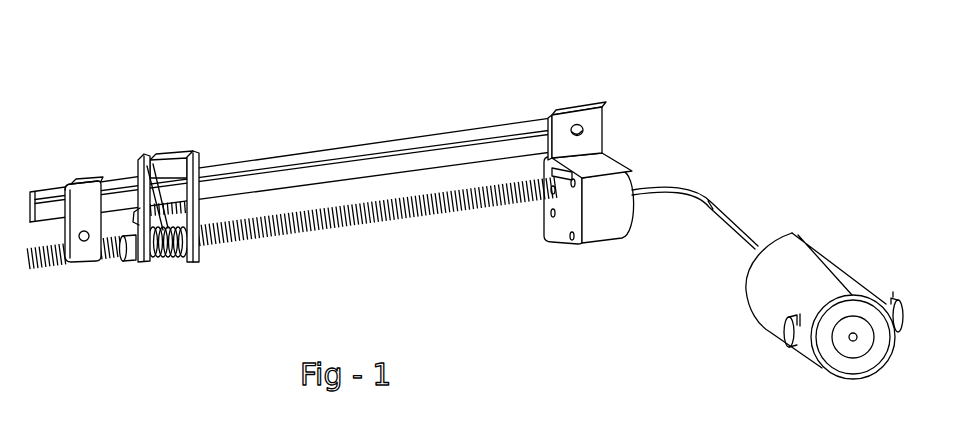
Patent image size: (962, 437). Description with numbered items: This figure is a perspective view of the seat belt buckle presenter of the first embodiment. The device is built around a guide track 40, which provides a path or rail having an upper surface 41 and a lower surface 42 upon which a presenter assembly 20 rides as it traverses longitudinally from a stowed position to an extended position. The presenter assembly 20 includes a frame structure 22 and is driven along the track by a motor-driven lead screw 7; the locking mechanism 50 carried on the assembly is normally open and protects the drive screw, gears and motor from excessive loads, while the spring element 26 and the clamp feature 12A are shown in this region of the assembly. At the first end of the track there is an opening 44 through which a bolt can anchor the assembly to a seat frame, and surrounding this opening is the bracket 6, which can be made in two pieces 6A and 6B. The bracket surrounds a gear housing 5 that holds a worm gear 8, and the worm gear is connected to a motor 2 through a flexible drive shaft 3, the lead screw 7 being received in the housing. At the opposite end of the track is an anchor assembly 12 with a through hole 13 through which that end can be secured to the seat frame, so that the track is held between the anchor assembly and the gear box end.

The motor 2 is at (778, 298).
The flexible drive shaft 3 is at (688, 189).
The gear housing 5 is at (610, 157).
The bracket 6 is at (603, 212).
The bracket piece 6A is at (617, 232).
The bracket piece 6B is at (552, 111).
The lead screw 7 is at (260, 245).
The worm gear 8 is at (617, 168).
The anchor assembly 12 is at (77, 266).
The clamp top 12A is at (60, 188).
The through hole 13 is at (88, 243).
The presenter assembly 20 is at (198, 262).
The frame structure 22 is at (128, 163).
The spring 26 is at (173, 265).
The guide track 40 is at (313, 152).
The upper surface 41 is at (474, 136).
The lower surface 42 is at (277, 193).
The opening 44 is at (578, 125).
The locking mechanism 50 is at (146, 158).